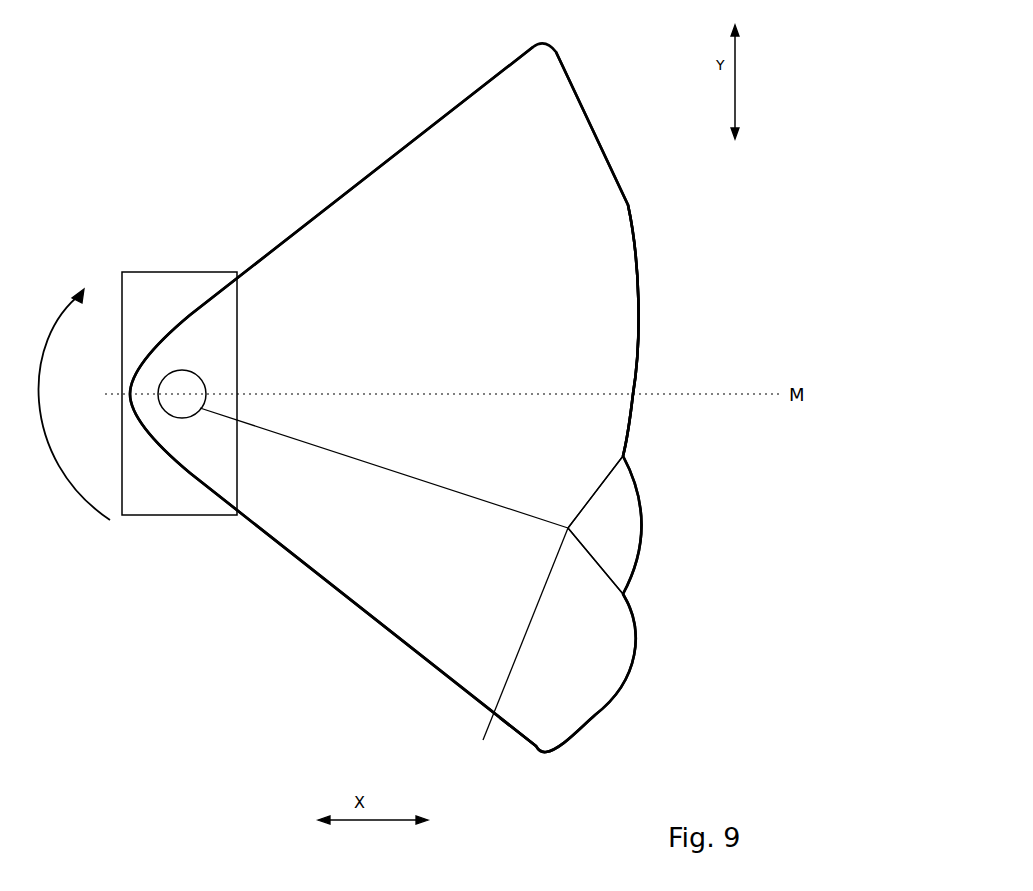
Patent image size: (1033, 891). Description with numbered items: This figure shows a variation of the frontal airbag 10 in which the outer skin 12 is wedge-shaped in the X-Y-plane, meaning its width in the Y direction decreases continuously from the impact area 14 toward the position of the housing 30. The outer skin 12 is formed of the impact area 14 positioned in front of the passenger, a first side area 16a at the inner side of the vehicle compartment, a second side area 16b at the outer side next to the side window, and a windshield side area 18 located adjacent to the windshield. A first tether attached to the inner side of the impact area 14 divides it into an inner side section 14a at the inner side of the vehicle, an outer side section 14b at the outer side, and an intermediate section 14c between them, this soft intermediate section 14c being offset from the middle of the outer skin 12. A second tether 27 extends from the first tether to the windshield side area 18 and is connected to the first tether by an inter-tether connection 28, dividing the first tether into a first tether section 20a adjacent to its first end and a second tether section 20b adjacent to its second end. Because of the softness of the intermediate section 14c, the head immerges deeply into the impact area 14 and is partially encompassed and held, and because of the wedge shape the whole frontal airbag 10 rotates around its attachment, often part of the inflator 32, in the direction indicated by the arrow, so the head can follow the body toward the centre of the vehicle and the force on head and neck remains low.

The frontal airbag 10 is at (573, 72).
The outer skin 12 is at (507, 720).
The impact area 14 is at (640, 307).
The inner side section 14a is at (627, 677).
The outer side section 14b is at (634, 375).
The intermediate section 14c is at (638, 568).
The first side area 16a is at (340, 592).
The second side area 16b is at (368, 178).
The windshield side area 18 is at (134, 376).
The first tether section 20a is at (588, 547).
The second tether section 20b is at (594, 505).
The second tether 27 is at (462, 500).
The inter-tether connection 28 is at (515, 646).
The housing 30 is at (192, 502).
The inflator 32 is at (182, 385).